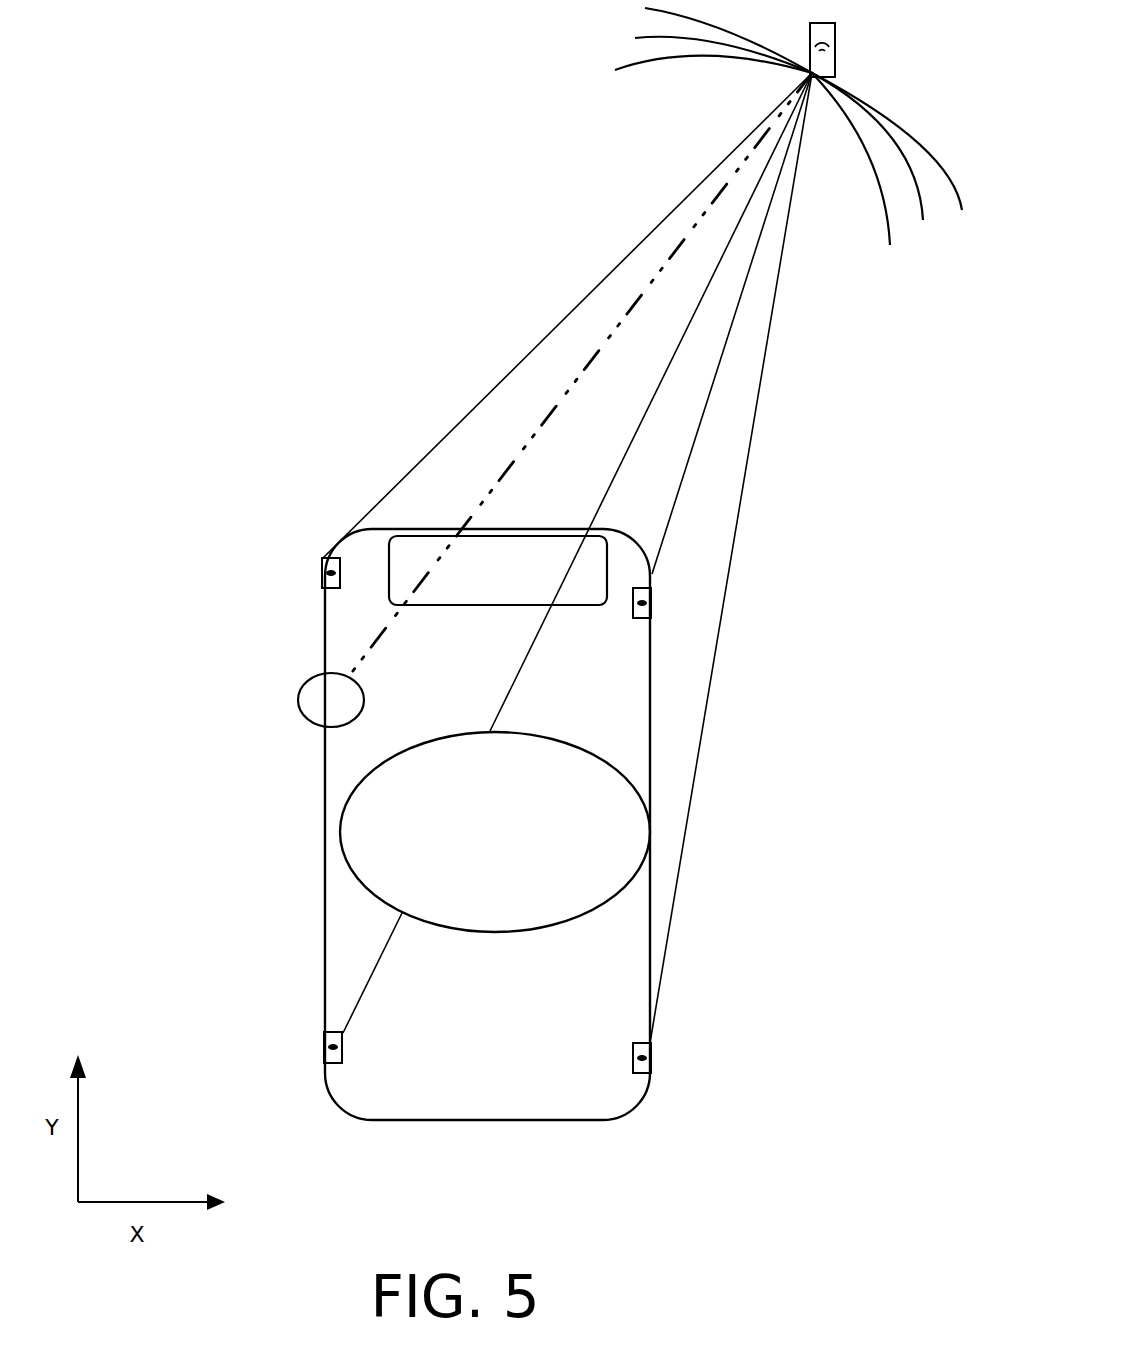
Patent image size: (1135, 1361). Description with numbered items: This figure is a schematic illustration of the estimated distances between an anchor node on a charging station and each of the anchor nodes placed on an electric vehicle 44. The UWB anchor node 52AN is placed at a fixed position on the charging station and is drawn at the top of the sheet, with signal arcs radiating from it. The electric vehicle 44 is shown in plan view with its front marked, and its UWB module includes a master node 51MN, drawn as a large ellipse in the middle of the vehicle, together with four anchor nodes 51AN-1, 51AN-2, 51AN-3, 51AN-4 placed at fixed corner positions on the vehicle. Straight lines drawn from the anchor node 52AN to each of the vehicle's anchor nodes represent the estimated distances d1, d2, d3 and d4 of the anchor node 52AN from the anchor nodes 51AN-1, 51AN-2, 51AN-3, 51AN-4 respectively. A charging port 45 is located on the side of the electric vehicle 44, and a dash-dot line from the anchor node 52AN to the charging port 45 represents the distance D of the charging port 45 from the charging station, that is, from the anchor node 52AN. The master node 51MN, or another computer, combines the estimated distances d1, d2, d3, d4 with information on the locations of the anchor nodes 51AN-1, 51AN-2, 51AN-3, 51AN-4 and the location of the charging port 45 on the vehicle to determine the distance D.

The UWB anchor node 52AN is at (833, 23).
The first anchor node 51AN-1 is at (322, 557).
The second anchor node 51AN-2 is at (652, 598).
The third anchor node 51AN-3 is at (327, 1032).
The fourth anchor node 51AN-4 is at (652, 1043).
The master node 51MN is at (495, 832).
The electric vehicle 44 is at (510, 528).
The charging port 45 is at (308, 688).
The distance of charging port from charging station D is at (580, 374).
The estimated distance to first anchor node d1 is at (567, 315).
The estimated distance to second anchor node d2 is at (732, 323).
The estimated distance to third anchor node d3 is at (651, 402).
The estimated distance to fourth anchor node d4 is at (731, 558).